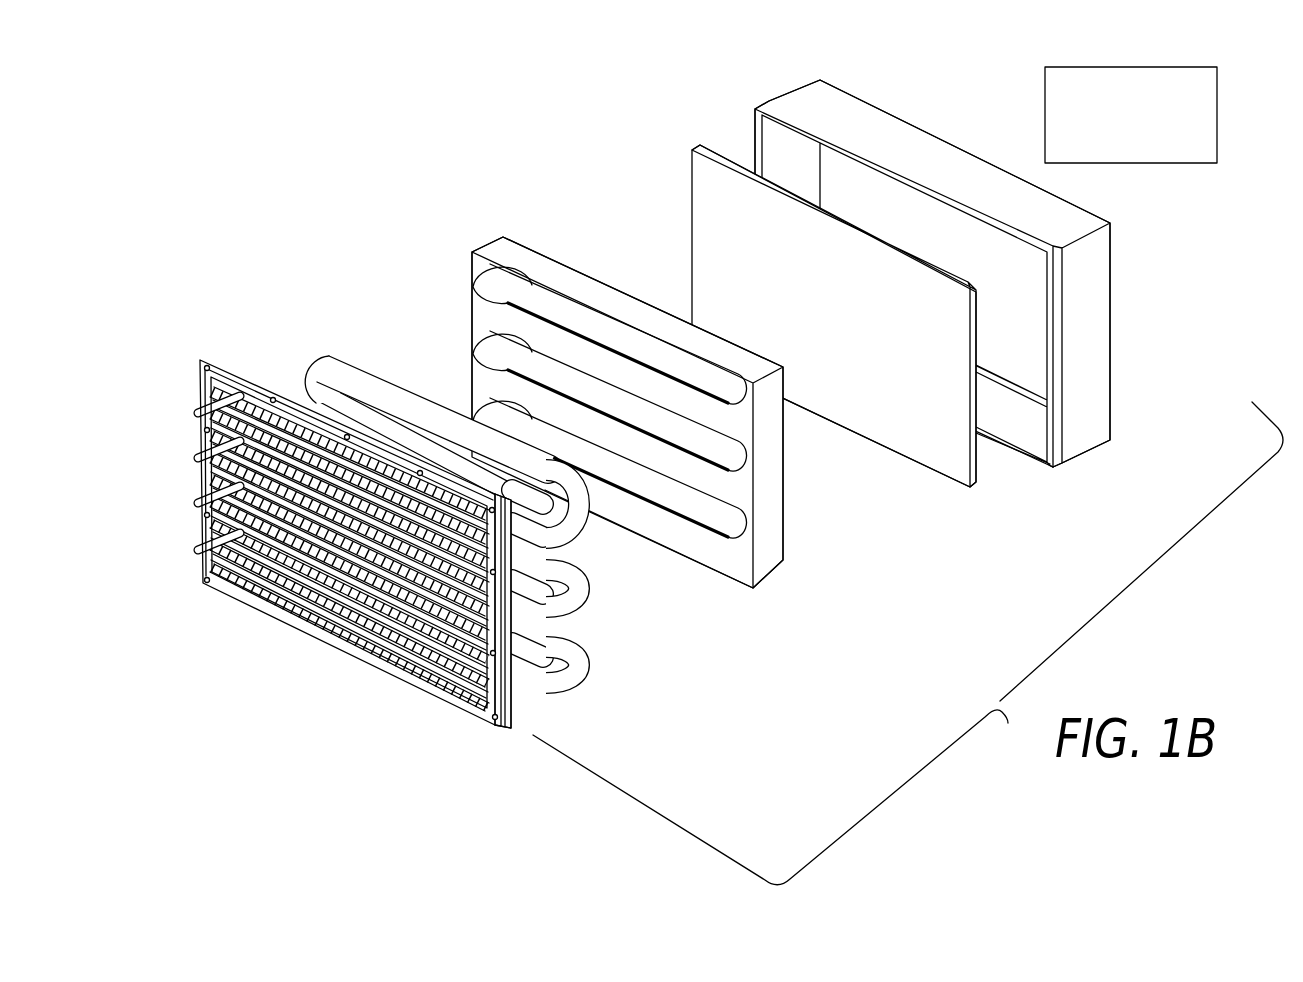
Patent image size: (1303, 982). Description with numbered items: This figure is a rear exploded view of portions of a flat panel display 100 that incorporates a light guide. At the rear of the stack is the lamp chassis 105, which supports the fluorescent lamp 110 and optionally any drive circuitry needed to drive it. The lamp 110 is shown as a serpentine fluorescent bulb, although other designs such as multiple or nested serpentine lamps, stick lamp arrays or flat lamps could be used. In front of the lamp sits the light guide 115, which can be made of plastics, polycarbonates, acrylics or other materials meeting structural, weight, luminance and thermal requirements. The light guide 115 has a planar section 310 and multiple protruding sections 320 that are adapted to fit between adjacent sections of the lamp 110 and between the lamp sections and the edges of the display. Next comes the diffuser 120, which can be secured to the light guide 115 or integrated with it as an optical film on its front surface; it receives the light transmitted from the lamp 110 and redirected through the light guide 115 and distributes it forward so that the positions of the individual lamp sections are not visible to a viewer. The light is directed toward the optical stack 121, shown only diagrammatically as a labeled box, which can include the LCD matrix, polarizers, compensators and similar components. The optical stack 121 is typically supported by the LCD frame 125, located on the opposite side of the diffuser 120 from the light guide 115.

The flat panel display 100 is at (515, 147).
The lamp chassis 105 is at (503, 727).
The lamp 110 is at (563, 643).
The light guide 115 is at (619, 410).
The diffuser 120 is at (980, 474).
The optical stack 121 is at (1121, 163).
The LCD frame 125 is at (1083, 448).
The planar section 310 is at (505, 247).
The protruding sections 320 is at (507, 305).